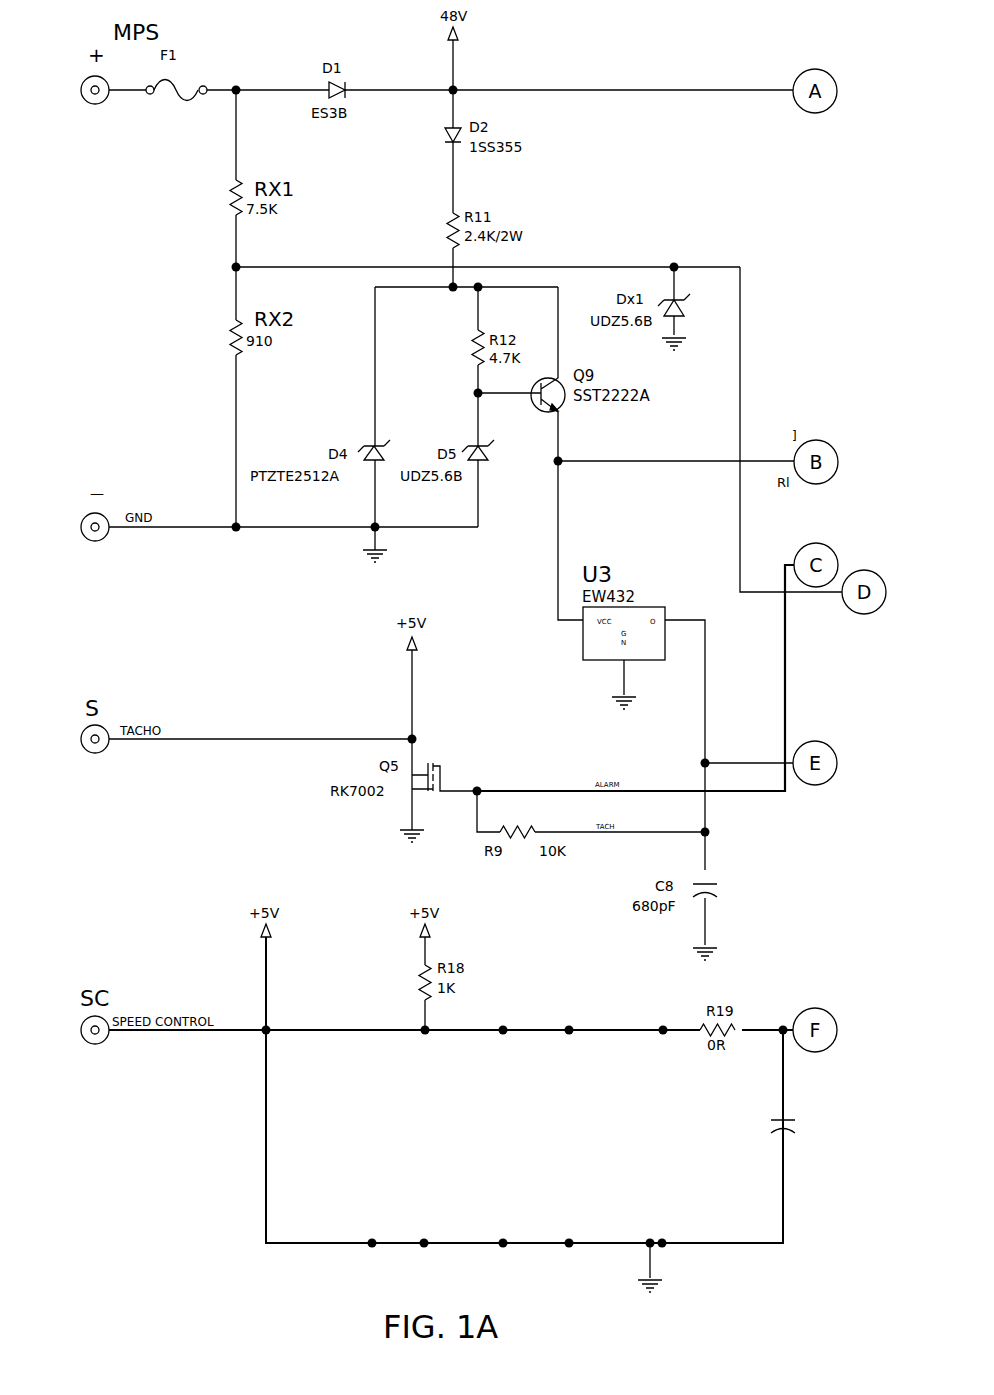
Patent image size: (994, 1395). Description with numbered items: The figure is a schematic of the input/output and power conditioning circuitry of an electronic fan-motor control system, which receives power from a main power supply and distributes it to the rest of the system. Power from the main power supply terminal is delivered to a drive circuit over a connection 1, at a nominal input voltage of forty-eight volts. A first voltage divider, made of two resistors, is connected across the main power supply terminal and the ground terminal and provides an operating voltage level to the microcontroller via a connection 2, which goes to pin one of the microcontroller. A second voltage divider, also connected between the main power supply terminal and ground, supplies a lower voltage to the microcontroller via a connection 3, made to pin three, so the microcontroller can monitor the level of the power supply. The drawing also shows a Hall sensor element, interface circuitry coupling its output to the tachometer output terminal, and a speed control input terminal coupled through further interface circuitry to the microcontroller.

The connection 1 is at (557, 90).
The connection 2 is at (650, 461).
The connection 3 is at (603, 267).